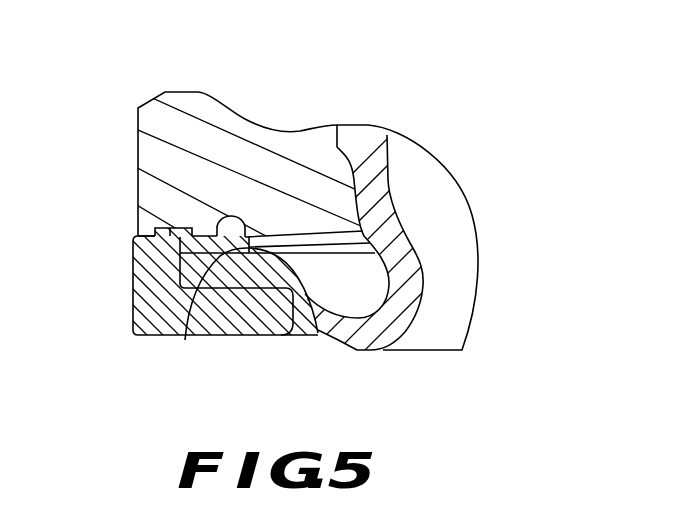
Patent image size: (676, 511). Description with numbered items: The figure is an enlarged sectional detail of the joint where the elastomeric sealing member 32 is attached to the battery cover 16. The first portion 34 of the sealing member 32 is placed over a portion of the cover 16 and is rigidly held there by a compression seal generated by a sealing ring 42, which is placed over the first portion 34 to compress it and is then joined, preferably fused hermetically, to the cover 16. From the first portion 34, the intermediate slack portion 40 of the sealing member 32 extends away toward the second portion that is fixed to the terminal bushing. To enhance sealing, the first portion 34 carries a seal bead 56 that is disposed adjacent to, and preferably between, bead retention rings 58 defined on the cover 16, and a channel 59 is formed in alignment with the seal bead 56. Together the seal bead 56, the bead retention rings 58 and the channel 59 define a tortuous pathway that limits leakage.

The cover 16 is at (258, 108).
The sealing member 32 is at (371, 352).
The first portion 34 is at (185, 340).
The intermediate slack portion 40 is at (423, 277).
The sealing ring 42 is at (152, 305).
The seal bead 56 is at (253, 288).
The bead retention ring 58 is at (262, 233).
The channel 59 is at (228, 220).